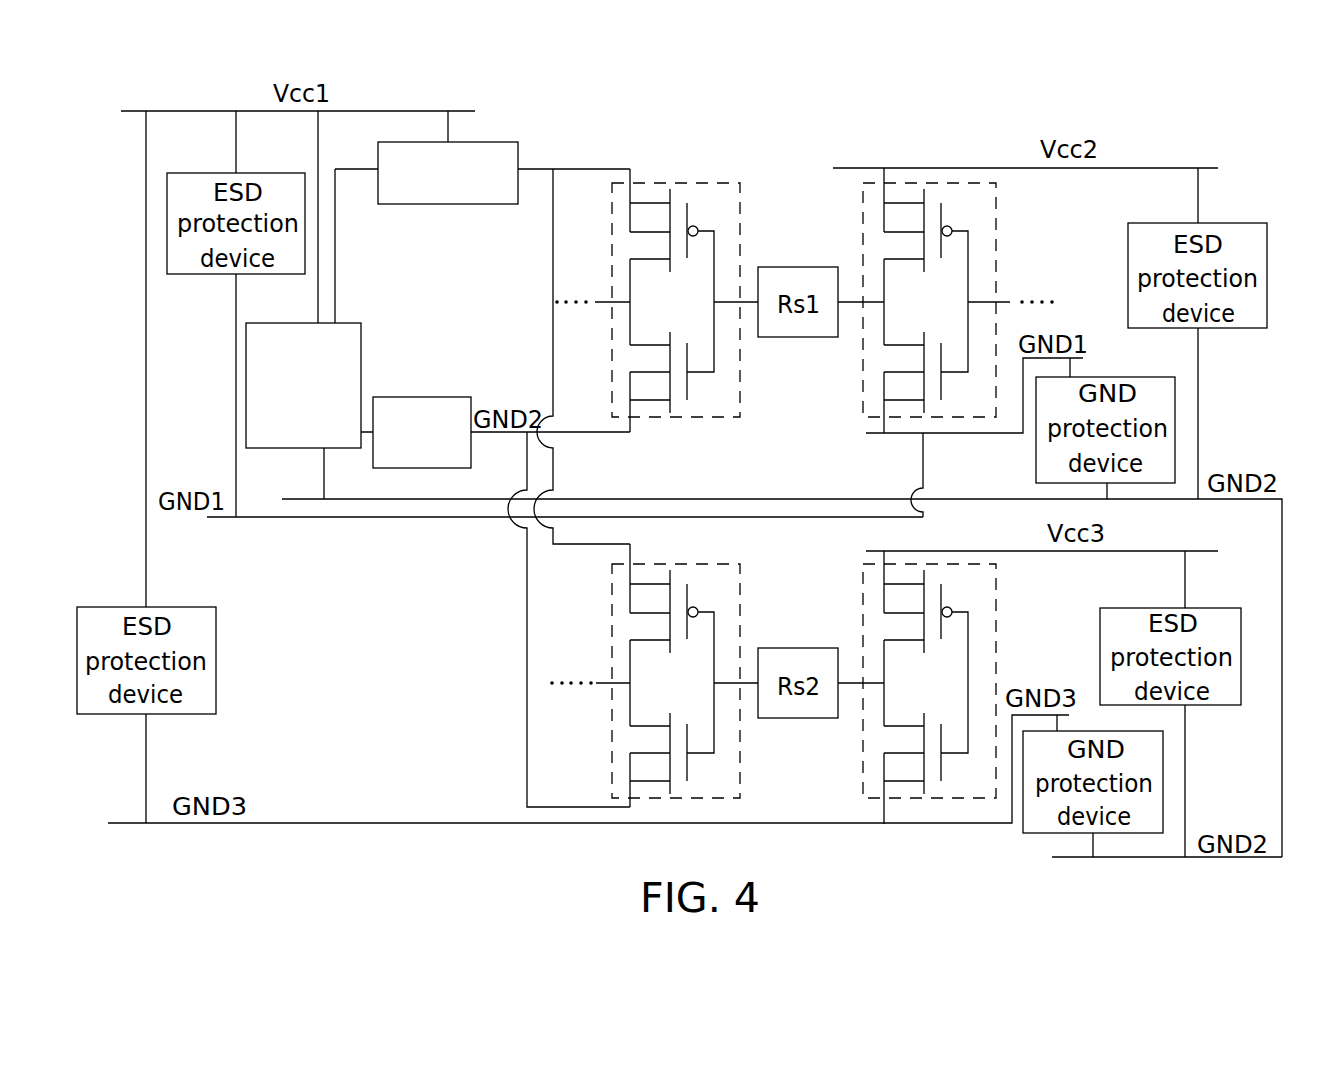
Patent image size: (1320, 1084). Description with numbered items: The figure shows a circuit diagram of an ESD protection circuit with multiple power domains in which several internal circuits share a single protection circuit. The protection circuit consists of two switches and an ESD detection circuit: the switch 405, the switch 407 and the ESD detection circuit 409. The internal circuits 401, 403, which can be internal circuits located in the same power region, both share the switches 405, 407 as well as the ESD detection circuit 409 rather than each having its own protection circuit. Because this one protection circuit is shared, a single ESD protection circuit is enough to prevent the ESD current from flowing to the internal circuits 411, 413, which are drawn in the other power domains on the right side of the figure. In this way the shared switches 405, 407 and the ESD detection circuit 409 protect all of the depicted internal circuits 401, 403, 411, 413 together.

The internal circuit 401 is at (739, 210).
The internal circuit 403 is at (740, 591).
The switch 405 is at (448, 205).
The switch 407 is at (423, 396).
The ESD detection circuit 409 is at (345, 322).
The internal circuit 411 is at (997, 208).
The internal circuit 413 is at (997, 590).